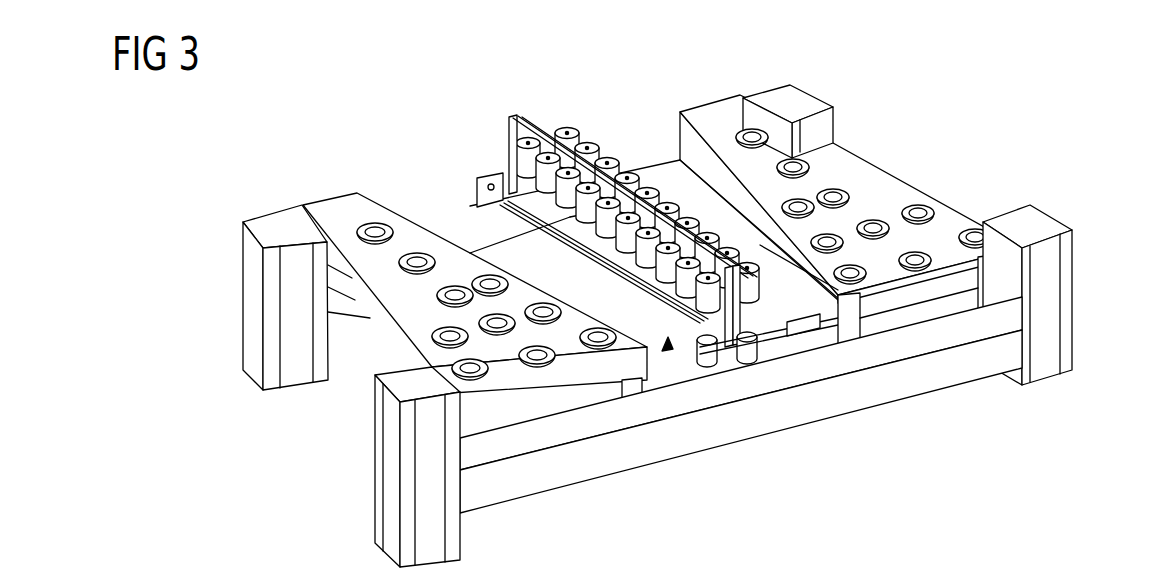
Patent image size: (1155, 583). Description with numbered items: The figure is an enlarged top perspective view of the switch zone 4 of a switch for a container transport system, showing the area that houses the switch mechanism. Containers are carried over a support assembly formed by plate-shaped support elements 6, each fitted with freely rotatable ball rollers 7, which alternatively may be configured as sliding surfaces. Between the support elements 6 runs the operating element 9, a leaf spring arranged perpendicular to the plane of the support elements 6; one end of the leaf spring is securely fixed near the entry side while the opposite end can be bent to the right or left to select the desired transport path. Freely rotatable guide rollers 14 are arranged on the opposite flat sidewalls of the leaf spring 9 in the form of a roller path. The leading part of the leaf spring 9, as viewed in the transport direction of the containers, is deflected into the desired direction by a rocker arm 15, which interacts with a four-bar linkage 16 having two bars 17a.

The switch zone 4 is at (657, 314).
The support element 6 is at (417, 318).
The ball roller 7 is at (375, 230).
The operating element 9 is at (529, 117).
The guide roller 14 is at (570, 126).
The rocker arm 15 is at (818, 333).
The four-bar linkage 16 is at (668, 346).
The bar 17a is at (597, 260).